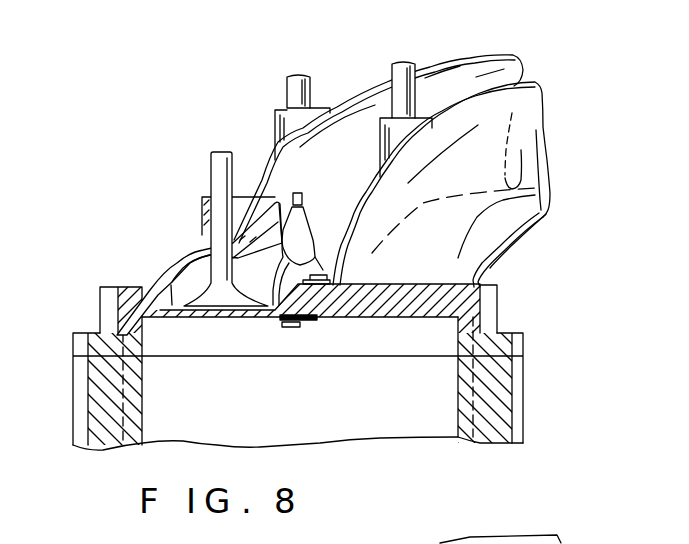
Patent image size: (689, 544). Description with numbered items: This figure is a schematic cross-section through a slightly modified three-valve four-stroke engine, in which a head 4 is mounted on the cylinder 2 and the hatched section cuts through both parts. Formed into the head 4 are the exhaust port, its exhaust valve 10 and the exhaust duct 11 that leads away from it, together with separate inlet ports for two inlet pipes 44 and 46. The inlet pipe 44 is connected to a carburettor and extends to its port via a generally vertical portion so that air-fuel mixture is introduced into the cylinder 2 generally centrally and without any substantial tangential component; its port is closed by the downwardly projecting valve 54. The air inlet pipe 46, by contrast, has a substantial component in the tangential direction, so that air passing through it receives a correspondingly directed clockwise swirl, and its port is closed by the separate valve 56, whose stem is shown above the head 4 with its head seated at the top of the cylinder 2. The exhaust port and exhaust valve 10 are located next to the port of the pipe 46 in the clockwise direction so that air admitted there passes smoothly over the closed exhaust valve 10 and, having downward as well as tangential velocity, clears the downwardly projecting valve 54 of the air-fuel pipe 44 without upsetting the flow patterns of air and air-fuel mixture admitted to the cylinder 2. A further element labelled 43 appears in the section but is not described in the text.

The cylinder 2 is at (503, 398).
The head 4 is at (495, 343).
The exhaust valve 10 is at (287, 90).
The exhaust duct 11 is at (487, 70).
The fuel injector 43 is at (303, 223).
The inlet pipe 44 is at (527, 128).
The air inlet pipe 46 is at (177, 252).
The valve 54 is at (392, 67).
The valve 56 is at (220, 168).